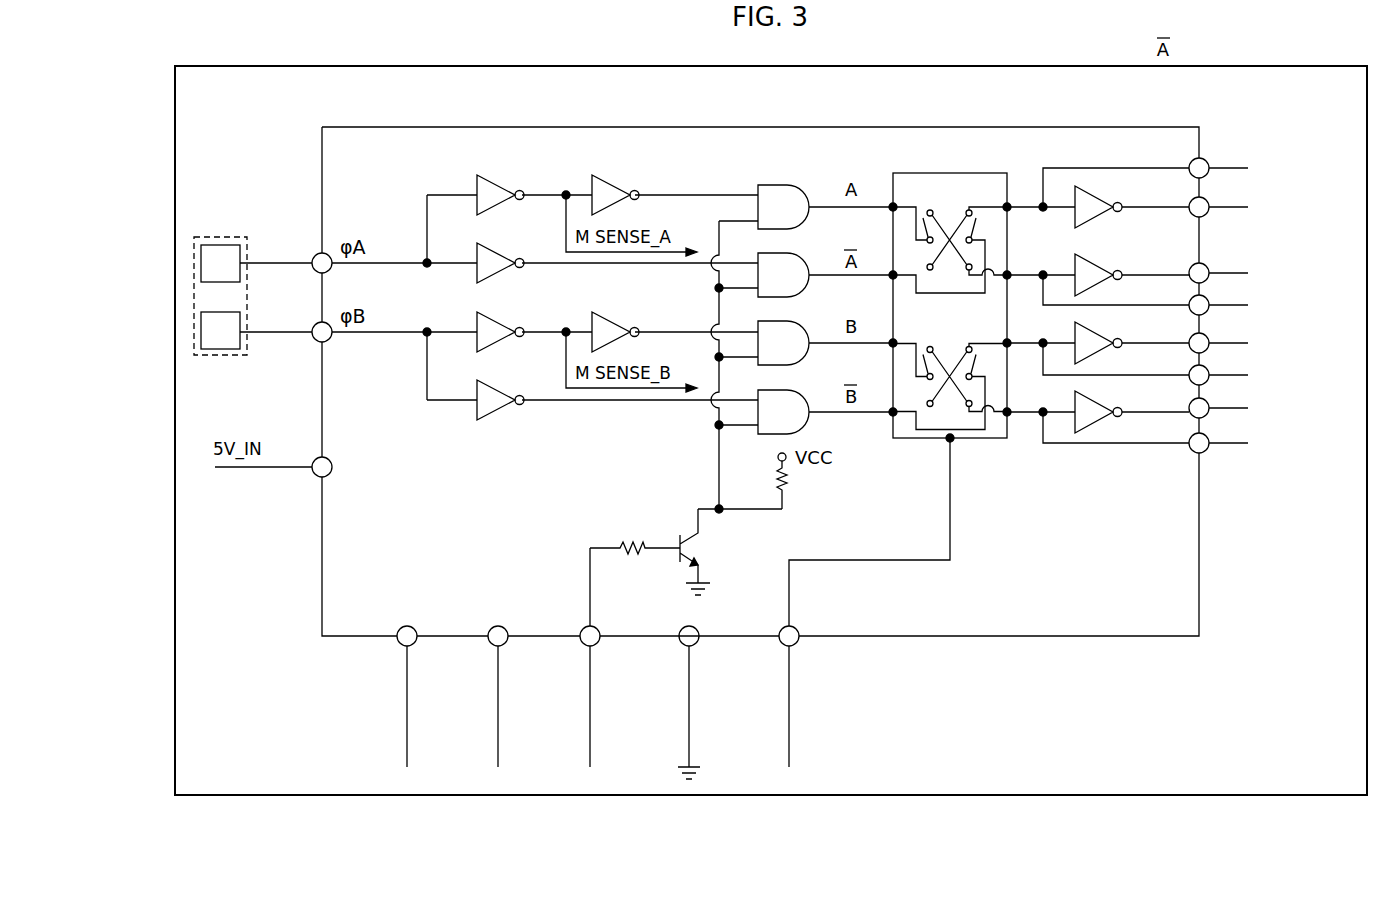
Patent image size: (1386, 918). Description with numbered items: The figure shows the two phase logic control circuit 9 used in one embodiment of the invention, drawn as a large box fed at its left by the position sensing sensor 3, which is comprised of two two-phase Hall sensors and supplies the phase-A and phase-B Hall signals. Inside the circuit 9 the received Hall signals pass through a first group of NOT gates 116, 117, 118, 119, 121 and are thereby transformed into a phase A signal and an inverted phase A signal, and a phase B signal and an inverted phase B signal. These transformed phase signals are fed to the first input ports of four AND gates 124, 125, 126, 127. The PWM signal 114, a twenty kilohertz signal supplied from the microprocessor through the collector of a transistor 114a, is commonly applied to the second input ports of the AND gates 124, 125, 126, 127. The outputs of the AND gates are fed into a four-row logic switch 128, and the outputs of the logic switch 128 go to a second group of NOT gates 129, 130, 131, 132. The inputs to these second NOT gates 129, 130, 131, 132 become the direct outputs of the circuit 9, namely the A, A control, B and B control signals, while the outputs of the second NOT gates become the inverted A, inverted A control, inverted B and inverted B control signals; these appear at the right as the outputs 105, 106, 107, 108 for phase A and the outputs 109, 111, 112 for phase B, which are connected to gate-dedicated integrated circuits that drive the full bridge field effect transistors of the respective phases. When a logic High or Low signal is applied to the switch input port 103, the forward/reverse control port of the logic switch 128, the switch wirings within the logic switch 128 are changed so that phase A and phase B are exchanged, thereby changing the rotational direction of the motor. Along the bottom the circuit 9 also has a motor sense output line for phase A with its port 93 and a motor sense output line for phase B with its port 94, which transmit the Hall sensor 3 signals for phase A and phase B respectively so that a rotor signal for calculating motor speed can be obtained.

The position sensing sensor 3 is at (230, 356).
The 2 phase logic control circuit 9 is at (742, 127).
The port 93 is at (500, 626).
The port 94 is at (409, 626).
The switch input port 103 is at (797, 628).
The output 105 is at (1207, 160).
The output 106 is at (1208, 216).
The output 107 is at (1213, 298).
The output 108 is at (1213, 265).
The output 109 is at (1212, 380).
The output 111 is at (1208, 452).
The output 112 is at (1212, 413).
The PWM signal 114 is at (598, 628).
The transistor 114a is at (678, 540).
The NOT gate 116 is at (490, 183).
The NOT gate 117 is at (607, 183).
The NOT gate 118 is at (490, 251).
The NOT gate 119 is at (490, 320).
The NOT gate 121 is at (490, 388).
The AND gate 124 is at (803, 193).
The AND gate 125 is at (803, 261).
The AND gate 126 is at (803, 329).
The AND gate 127 is at (803, 398).
The four-row logic switch 128 is at (936, 440).
The NOT gate 129 is at (1108, 210).
The NOT gate 130 is at (1108, 278).
The NOT gate 131 is at (1108, 346).
The NOT gate 132 is at (1108, 415).